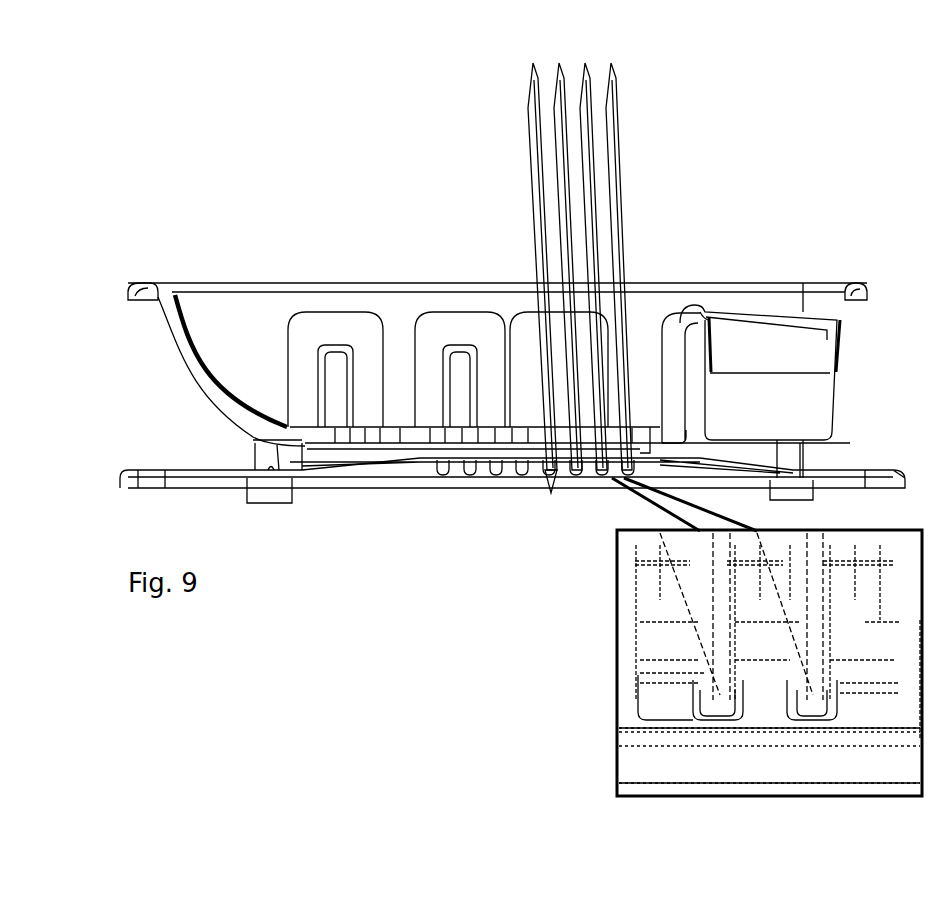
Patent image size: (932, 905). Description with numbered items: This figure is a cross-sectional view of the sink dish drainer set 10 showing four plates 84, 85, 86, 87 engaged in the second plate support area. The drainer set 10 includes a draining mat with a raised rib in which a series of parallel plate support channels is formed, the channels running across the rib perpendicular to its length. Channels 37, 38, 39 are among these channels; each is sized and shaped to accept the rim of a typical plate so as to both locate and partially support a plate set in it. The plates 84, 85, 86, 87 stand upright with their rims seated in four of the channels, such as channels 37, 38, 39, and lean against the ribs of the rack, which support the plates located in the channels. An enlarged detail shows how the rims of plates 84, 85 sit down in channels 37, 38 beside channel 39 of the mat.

The sink dish drainer set 10 is at (347, 268).
The plate support channel 37 is at (815, 720).
The plate support channel 38 is at (733, 720).
The plate support channel 39 is at (620, 722).
The spike 84 is at (612, 72).
The spike 85 is at (706, 541).
The spike 86 is at (558, 62).
The spike 87 is at (531, 66).